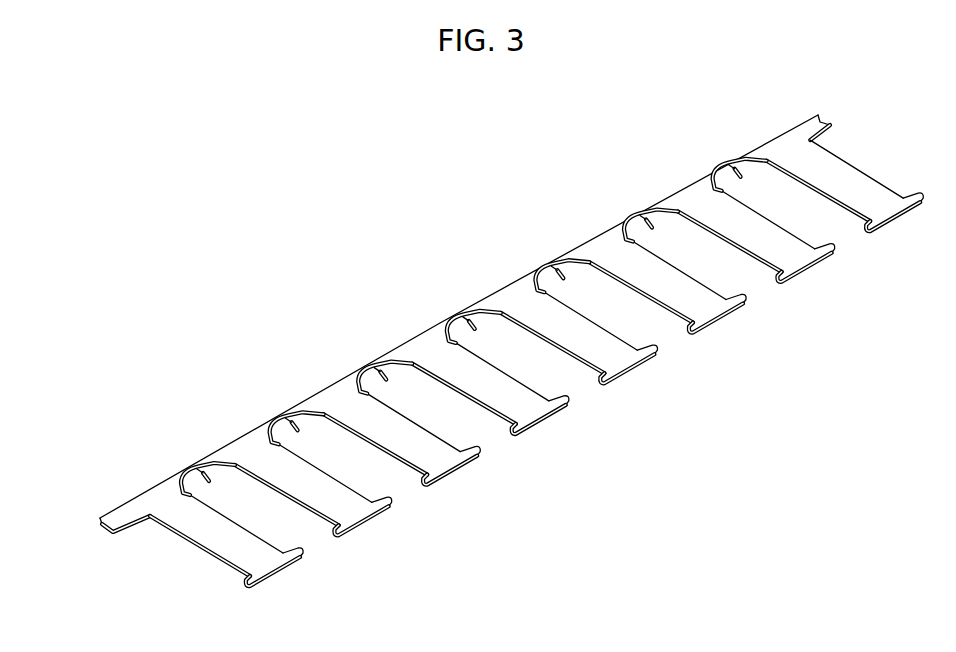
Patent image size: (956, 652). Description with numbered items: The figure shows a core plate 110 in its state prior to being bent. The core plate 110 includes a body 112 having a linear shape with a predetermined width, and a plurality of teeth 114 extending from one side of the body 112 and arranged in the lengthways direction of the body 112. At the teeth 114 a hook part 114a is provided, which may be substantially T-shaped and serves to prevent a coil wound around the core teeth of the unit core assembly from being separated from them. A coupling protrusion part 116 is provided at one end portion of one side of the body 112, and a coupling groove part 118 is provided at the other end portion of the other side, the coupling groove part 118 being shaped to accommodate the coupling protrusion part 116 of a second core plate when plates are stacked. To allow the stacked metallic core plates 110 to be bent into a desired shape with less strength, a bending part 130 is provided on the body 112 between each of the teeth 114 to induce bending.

The core plate 110 is at (356, 189).
The body 112 is at (425, 345).
The teeth 114 is at (401, 456).
The hook part 114a is at (478, 454).
The coupling protrusion part 116 is at (103, 525).
The coupling groove part 118 is at (820, 114).
The bending part 130 is at (203, 461).